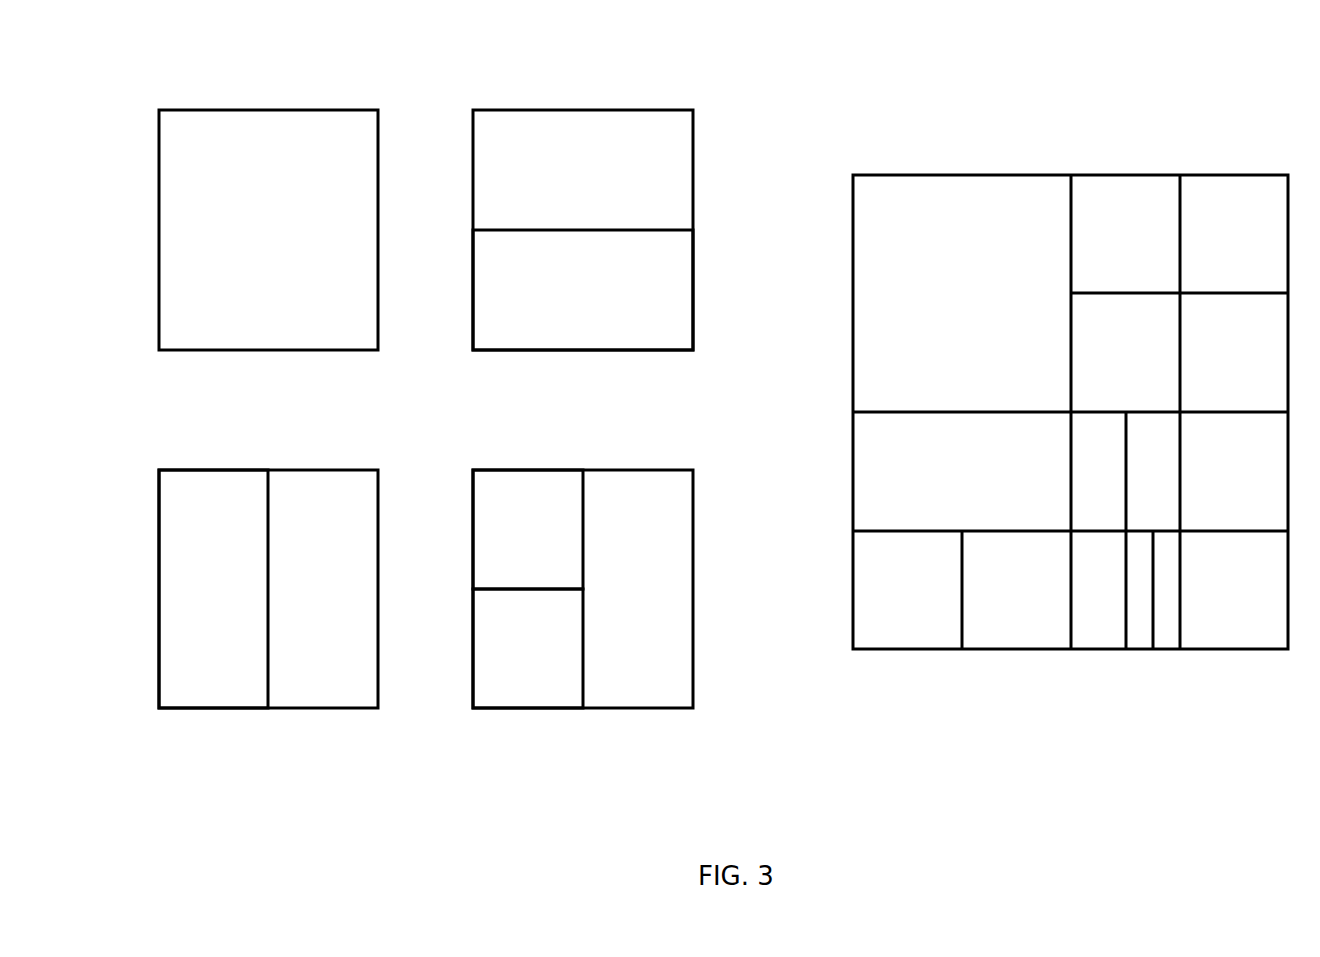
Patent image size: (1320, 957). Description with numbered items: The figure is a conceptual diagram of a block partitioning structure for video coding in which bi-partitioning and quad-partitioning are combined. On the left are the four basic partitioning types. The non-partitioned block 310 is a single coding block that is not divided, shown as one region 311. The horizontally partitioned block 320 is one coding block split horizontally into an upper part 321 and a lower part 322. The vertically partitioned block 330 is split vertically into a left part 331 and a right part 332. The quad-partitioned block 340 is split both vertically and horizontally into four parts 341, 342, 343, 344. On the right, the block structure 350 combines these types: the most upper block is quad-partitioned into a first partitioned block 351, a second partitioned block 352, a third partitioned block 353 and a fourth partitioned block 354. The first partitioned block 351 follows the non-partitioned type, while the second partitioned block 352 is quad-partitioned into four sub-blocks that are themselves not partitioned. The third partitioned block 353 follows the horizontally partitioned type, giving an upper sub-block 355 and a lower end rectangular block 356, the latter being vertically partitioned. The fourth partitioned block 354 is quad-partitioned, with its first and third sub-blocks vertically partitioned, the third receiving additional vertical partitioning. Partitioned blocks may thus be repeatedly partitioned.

The non-partitioned block 310 is at (160, 110).
The full-screen display region 311 is at (272, 110).
The horizontally partitioned block 320 is at (473, 110).
The upper display region 321 is at (695, 168).
The lower display region 322 is at (695, 290).
The vertically partitioned block 330 is at (160, 470).
The left display region 331 is at (210, 470).
The right display region 332 is at (318, 470).
The quad-partitioned block 340 is at (473, 470).
The upper-left display region 341 is at (527, 470).
The upper-right display region 342 is at (636, 470).
The lower-left display region 343 is at (540, 710).
The lower-right display region 344 is at (648, 710).
The block structure 350 is at (853, 175).
The first partitioned block 351 is at (962, 175).
The second partitioned block 352 is at (1180, 175).
The third partitioned block 353 is at (962, 650).
The fourth partitioned block 354 is at (1180, 650).
The middle-left sub-region 355 is at (853, 470).
The lower end rectangular block 356 is at (853, 588).